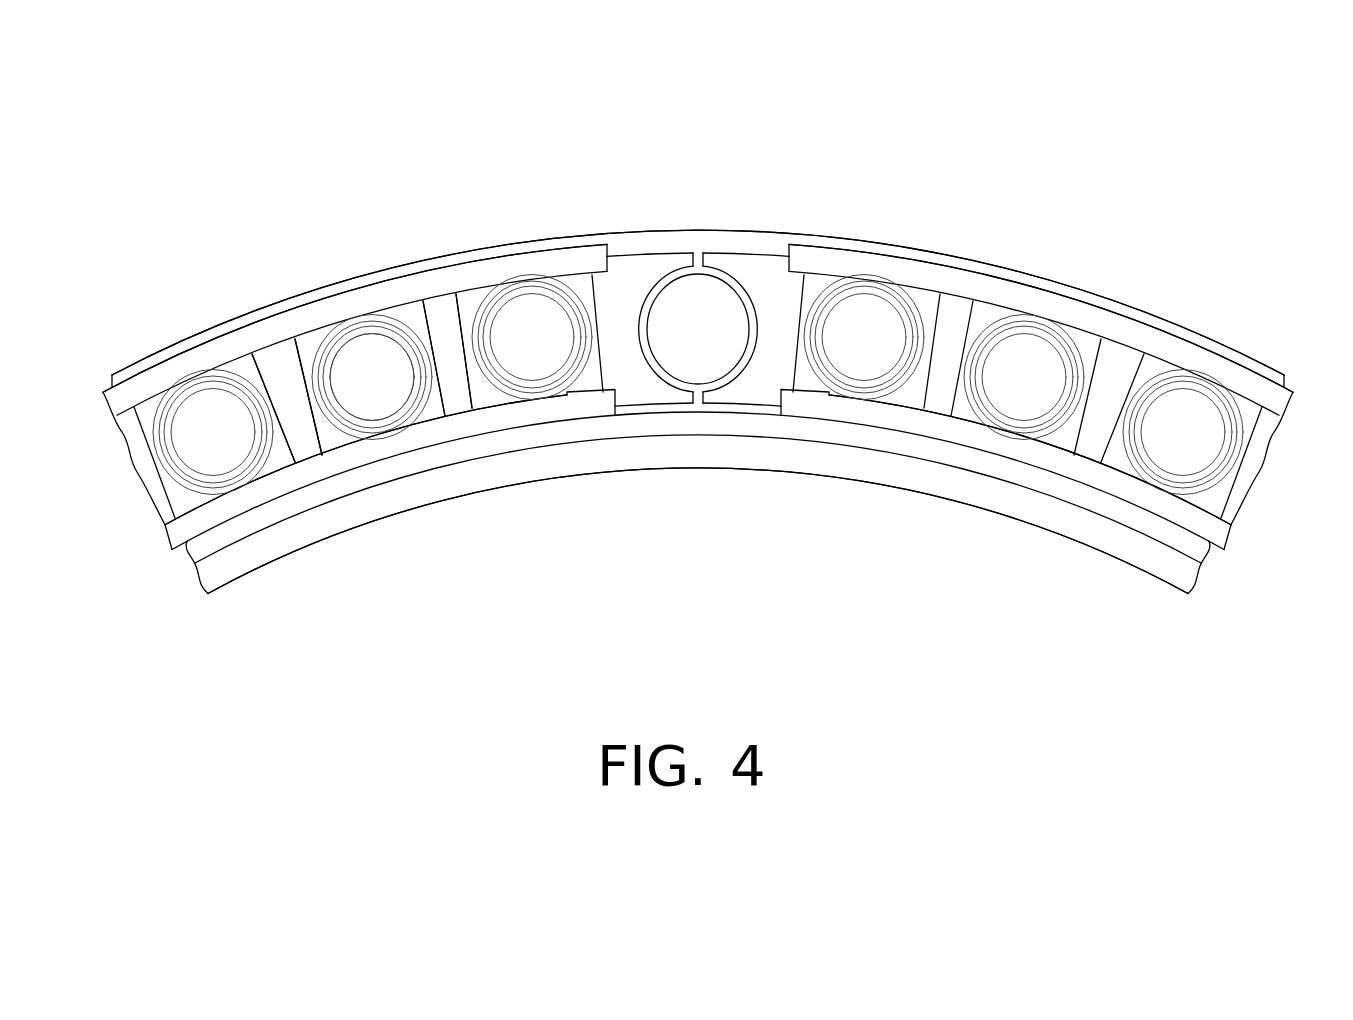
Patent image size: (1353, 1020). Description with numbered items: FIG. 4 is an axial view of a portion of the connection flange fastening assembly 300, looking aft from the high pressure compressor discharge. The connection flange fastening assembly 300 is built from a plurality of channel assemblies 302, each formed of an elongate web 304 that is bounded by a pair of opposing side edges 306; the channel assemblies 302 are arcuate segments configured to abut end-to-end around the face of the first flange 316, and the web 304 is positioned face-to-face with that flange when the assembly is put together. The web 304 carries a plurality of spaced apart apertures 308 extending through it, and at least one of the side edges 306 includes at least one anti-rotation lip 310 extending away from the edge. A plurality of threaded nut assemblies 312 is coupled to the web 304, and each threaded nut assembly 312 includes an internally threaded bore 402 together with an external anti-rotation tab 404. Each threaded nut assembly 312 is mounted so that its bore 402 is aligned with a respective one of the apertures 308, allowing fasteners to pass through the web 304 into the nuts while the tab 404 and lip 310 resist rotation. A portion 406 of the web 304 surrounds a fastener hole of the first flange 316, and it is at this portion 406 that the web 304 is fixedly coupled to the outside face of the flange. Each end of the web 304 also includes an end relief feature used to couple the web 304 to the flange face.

The connection flange fastening assembly 300 is at (450, 105).
The channel assembly 302 is at (443, 305).
The elongate web 304 is at (634, 270).
The side edge 306 is at (277, 320).
The aperture 308 is at (395, 387).
The anti-rotation lip 310 is at (596, 277).
The threaded nut assembly 312 is at (338, 433).
The first flange 316 is at (885, 242).
The internally threaded bore 402 is at (387, 403).
The external anti-rotation tab 404 is at (477, 292).
The portion of web 406 is at (625, 395).